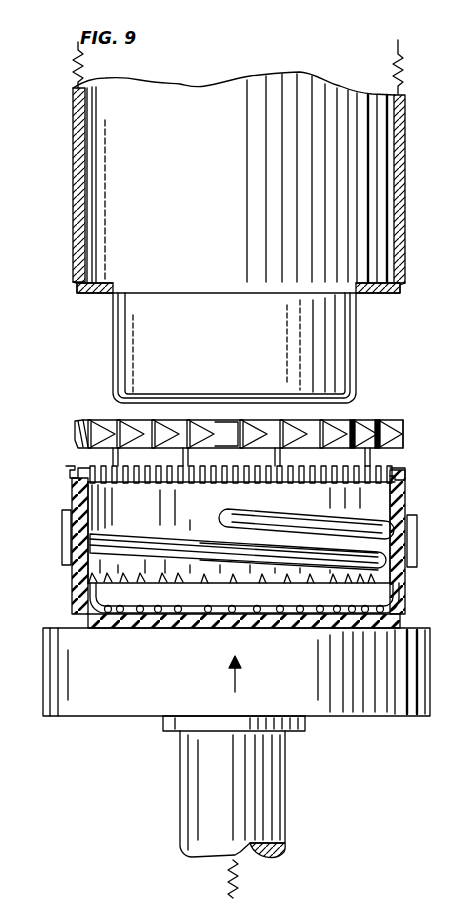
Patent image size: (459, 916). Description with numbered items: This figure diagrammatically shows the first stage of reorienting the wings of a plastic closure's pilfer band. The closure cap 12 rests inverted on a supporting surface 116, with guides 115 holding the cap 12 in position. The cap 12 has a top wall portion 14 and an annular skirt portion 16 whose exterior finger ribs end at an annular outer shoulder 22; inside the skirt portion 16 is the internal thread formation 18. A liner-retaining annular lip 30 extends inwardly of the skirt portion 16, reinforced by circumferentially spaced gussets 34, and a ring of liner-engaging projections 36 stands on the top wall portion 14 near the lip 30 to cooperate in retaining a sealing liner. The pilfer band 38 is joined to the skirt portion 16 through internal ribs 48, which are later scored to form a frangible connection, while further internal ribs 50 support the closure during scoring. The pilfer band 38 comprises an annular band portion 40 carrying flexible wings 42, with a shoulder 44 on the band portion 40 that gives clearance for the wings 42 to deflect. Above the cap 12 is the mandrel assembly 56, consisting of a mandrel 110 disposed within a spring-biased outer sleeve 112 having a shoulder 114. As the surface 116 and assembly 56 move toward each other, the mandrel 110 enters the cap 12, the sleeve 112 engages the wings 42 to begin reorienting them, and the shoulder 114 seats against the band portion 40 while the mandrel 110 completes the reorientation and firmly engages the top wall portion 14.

The mandrel assembly 56 is at (442, 132).
The outer sleeve 112 is at (73, 129).
The shoulder 114 is at (402, 292).
The mandrel 110 is at (287, 331).
The annular band portion 40 is at (104, 420).
The wings 42 is at (400, 372).
The shoulder 44 is at (217, 421).
The pilfer band 38 is at (411, 467).
The internal ribs 48 is at (118, 470).
The internal ribs 50 is at (208, 484).
The skirt portion 16 is at (75, 490).
The annular outer shoulder 22 is at (410, 480).
The closure cap 12 is at (410, 578).
The guides 115 is at (48, 518).
The internal thread formation 18 is at (258, 545).
The liner-retaining annular lip 30 is at (228, 582).
The reinforcing gussets 34 is at (140, 577).
The top wall portion 14 is at (282, 632).
The liner-engaging projections 36 is at (138, 613).
The surface 116 is at (405, 628).